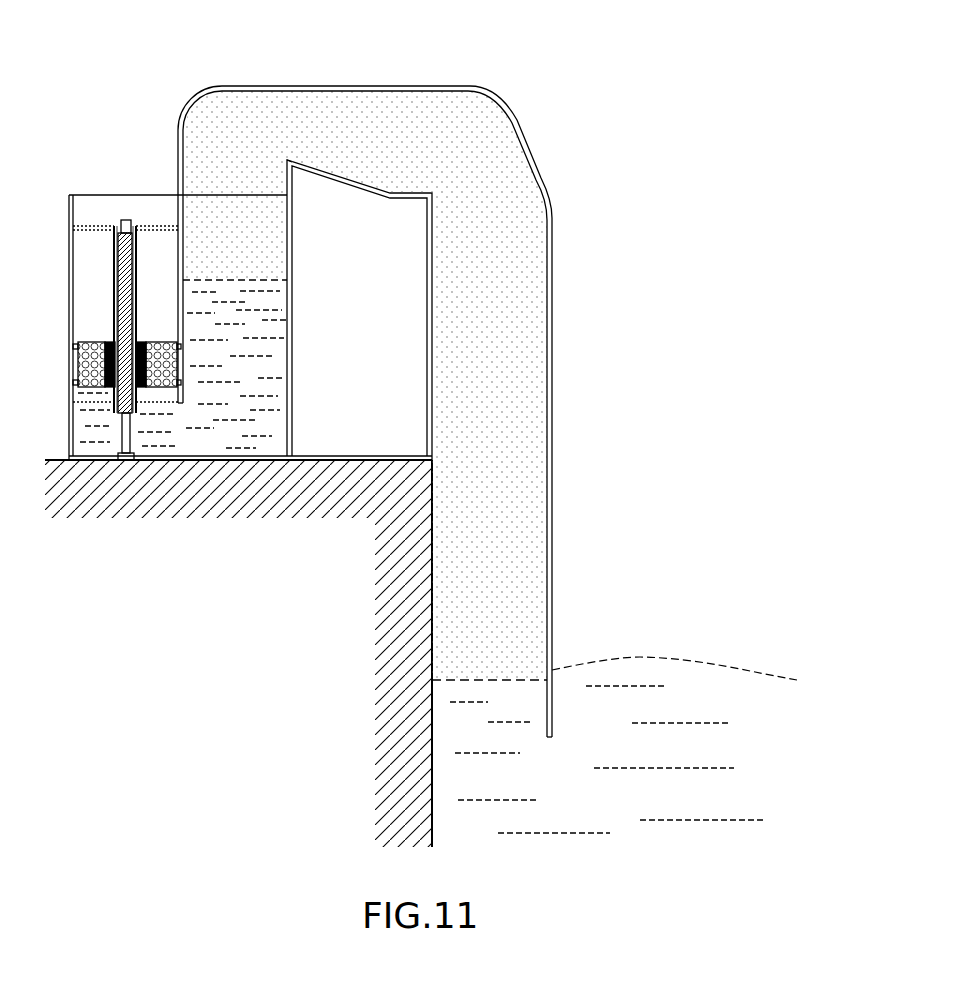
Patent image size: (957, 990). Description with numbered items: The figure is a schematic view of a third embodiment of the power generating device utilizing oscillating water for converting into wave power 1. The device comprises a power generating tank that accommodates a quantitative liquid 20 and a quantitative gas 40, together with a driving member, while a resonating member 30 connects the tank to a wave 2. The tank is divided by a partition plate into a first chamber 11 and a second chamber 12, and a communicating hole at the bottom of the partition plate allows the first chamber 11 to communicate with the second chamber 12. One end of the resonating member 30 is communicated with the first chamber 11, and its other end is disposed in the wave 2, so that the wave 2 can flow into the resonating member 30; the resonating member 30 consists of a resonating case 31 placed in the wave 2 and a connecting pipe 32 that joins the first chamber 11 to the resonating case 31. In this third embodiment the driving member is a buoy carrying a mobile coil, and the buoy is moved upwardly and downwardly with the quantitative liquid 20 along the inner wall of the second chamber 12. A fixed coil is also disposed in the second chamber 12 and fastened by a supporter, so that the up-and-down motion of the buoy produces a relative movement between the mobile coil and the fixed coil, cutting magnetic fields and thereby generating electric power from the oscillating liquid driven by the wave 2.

The power generating device utilizing oscillating water for converting into wave pow 1 is at (428, 22).
The wave 2 is at (653, 668).
The first chamber 11 is at (280, 422).
The second chamber 12 is at (95, 450).
The quantitative liquid 20 is at (247, 373).
The resonating member 30 is at (389, 352).
The resonating case 31 is at (513, 151).
The connecting pipe 32 is at (405, 84).
The quantitative gas 40 is at (502, 332).